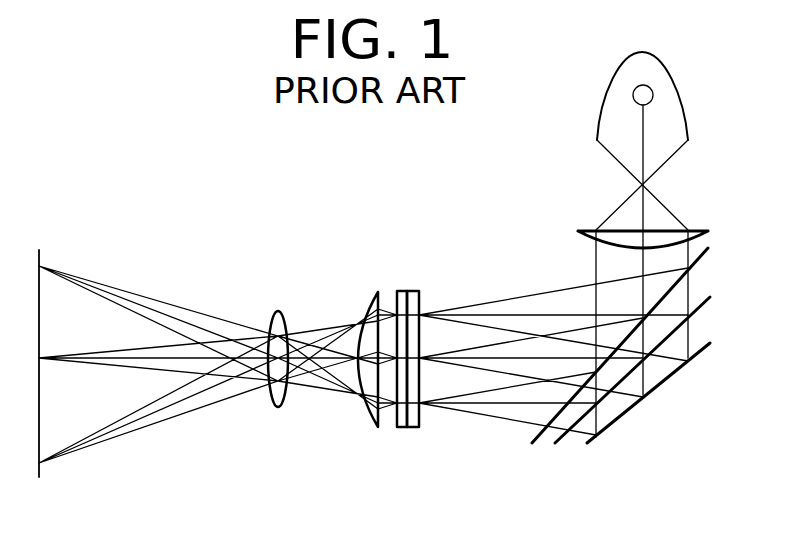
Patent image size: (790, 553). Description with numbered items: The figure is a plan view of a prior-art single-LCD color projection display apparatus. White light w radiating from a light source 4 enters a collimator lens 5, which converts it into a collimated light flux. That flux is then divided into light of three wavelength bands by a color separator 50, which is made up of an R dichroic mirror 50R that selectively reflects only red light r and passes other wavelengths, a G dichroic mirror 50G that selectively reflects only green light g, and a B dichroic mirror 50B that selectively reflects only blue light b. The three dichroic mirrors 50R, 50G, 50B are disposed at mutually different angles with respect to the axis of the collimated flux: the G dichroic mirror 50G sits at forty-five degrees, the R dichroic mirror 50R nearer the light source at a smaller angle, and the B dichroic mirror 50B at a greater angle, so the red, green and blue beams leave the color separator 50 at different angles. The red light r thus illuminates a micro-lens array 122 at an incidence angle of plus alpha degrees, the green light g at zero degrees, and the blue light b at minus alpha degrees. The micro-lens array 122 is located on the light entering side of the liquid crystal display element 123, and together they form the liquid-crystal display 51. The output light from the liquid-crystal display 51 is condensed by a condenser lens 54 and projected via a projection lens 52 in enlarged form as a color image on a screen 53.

The light source 4 is at (690, 128).
The collimator lens 5 is at (702, 228).
The color separator 50 is at (720, 240).
The R dichroic mirror 50R is at (534, 442).
The G dichroic mirror 50G is at (560, 443).
The B dichroic mirror 50B is at (618, 420).
The liquid-crystal display 51 is at (433, 266).
The projection lens 52 is at (278, 408).
The screen 53 is at (40, 474).
The condenser lens 54 is at (368, 420).
The micro-lens array 122 is at (421, 428).
The liquid crystal display element 123 is at (397, 428).
The blue light b is at (517, 373).
The green light g is at (540, 357).
The red light r is at (562, 330).
The white light w is at (643, 258).